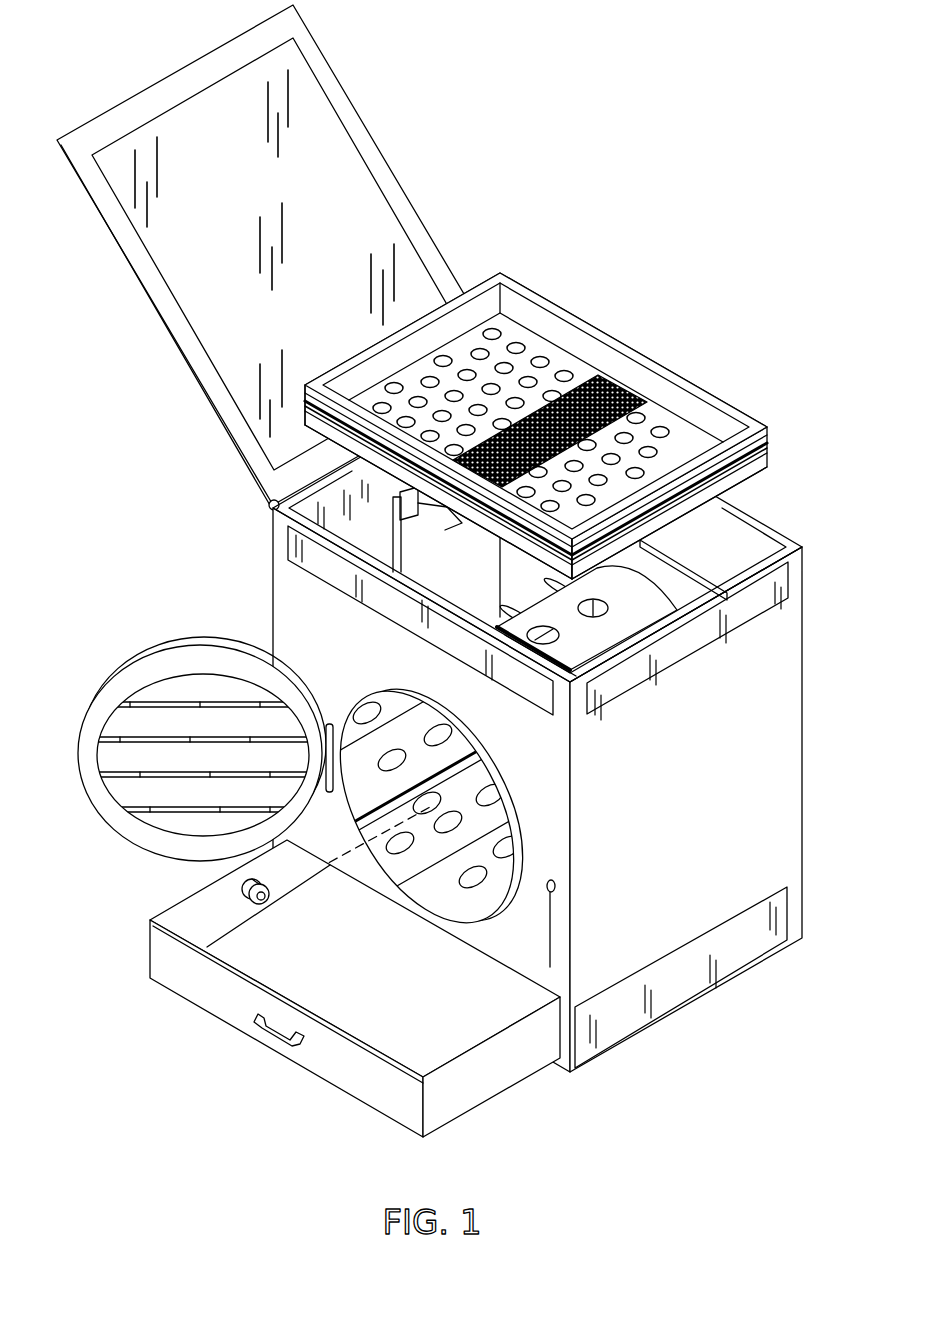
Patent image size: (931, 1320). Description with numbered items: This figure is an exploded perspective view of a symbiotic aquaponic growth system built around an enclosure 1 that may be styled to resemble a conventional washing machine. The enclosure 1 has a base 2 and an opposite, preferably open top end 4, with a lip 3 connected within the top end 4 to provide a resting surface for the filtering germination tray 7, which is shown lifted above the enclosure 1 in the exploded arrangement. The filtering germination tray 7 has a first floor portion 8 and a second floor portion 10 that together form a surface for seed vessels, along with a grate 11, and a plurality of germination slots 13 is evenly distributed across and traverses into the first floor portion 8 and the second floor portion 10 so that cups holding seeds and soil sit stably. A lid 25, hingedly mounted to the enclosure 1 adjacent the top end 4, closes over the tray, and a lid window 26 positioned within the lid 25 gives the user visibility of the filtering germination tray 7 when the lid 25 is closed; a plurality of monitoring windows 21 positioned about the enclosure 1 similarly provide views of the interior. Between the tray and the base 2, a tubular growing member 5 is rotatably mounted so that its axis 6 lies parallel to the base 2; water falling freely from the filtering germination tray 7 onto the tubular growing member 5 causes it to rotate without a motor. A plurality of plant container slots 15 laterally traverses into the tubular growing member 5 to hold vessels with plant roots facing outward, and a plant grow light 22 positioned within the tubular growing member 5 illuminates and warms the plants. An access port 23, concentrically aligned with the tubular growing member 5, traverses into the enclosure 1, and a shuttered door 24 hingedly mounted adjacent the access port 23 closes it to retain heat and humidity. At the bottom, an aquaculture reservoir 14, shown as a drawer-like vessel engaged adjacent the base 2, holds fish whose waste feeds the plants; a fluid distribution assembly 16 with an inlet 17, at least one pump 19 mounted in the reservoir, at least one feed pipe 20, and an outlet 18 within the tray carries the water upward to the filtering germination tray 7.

The enclosure 1 is at (255, 612).
The base 2 is at (650, 1027).
The lip 3 is at (668, 553).
The top end 4 is at (765, 517).
The tubular growing member 5 is at (537, 596).
The axis 6 is at (322, 870).
The filtering germination tray 7 is at (782, 448).
The first floor portion 8 is at (513, 330).
The second floor portion 10 is at (696, 443).
The grate 11 is at (617, 367).
The plurality of germination slots 13 is at (392, 380).
The aquaculture reservoir 14 is at (342, 1080).
The plurality of plant container slots 15 is at (595, 606).
The fluid distribution assembly 16 is at (406, 572).
The inlet 17 is at (266, 900).
The outlet 18 is at (414, 525).
The pump 19 is at (250, 893).
The feed pipe 20 is at (396, 547).
The plurality of monitoring windows 21 is at (313, 575).
The plant grow light 22 is at (478, 770).
The access port 23 is at (494, 816).
The shuttered door 24 is at (136, 660).
The lid 25 is at (182, 78).
The lid window 26 is at (194, 236).